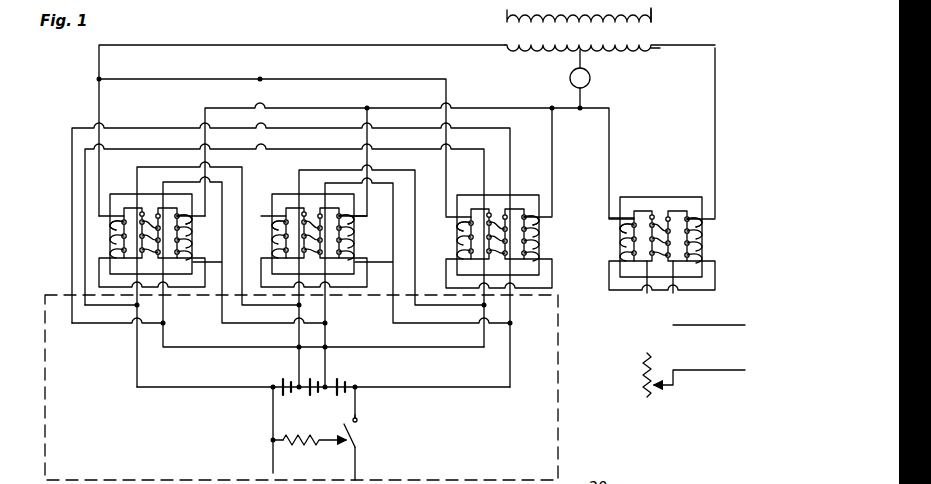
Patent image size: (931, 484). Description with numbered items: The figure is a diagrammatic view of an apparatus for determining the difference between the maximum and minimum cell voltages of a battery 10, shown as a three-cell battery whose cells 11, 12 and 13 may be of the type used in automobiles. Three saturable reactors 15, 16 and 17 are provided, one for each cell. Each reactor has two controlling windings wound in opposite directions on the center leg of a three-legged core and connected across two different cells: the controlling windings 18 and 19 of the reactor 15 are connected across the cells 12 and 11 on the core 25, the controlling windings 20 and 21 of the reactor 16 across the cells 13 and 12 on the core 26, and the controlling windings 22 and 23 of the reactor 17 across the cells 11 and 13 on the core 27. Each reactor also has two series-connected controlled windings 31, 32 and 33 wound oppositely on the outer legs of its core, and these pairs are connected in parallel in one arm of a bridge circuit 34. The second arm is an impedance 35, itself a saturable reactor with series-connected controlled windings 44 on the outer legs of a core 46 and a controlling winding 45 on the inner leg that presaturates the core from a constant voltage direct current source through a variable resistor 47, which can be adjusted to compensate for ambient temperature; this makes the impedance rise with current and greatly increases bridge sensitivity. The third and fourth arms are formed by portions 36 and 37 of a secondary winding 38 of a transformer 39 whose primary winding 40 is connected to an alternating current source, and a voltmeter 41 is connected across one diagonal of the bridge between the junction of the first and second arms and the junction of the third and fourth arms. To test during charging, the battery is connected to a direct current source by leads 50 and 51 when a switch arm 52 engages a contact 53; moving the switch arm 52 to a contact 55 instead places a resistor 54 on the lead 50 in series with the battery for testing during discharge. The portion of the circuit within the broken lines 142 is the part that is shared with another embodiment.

The battery 10 is at (323, 416).
The cell 11 is at (286, 378).
The cell 12 is at (314, 378).
The cell 13 is at (342, 378).
The saturable reactor 15 is at (104, 240).
The saturable reactor 16 is at (352, 236).
The saturable reactor 17 is at (548, 244).
The controlling winding 18 is at (148, 208).
The controlling winding 19 is at (163, 270).
The controlling winding 20 is at (310, 208).
The controlling winding 21 is at (325, 270).
The controlling winding 22 is at (494, 210).
The controlling winding 23 is at (510, 270).
The core 25 is at (118, 197).
The core 26 is at (282, 196).
The core 27 is at (520, 198).
The controlled windings 31 is at (108, 228).
The controlled windings 32 is at (272, 230).
The controlled windings 33 is at (458, 228).
The bridge circuit 34 is at (281, 42).
The impedance 35 is at (716, 226).
The portion of secondary winding 36 is at (630, 50).
The portion of secondary winding 37 is at (533, 55).
The secondary winding 38 is at (658, 44).
The transformer 39 is at (658, 24).
The primary winding 40 is at (507, 14).
The voltmeter 41 is at (569, 78).
The controlled windings 44 is at (704, 222).
The controlling winding 45 is at (658, 212).
The core 46 is at (697, 270).
The variable resistor 47 is at (640, 376).
The lead 50 is at (272, 440).
The lead 51 is at (358, 418).
The switch arm 52 is at (352, 428).
The contact 53 is at (352, 450).
The resistor 54 is at (296, 446).
The contact 55 is at (342, 446).
The broken lines 142 is at (559, 430).